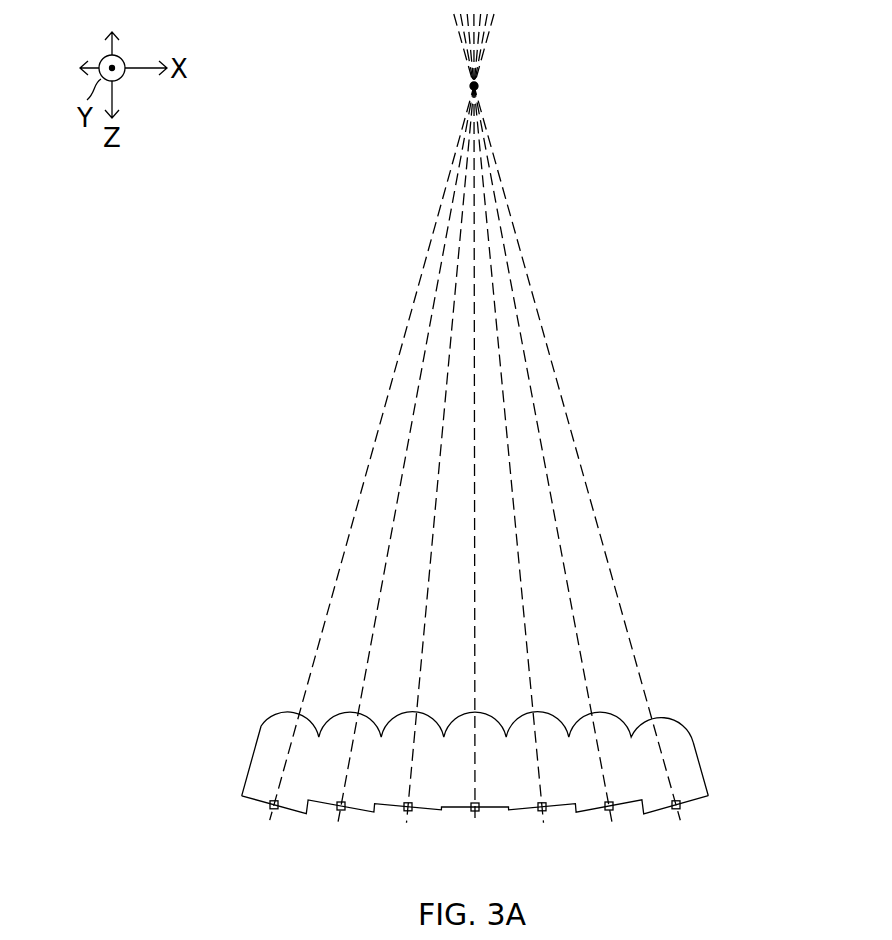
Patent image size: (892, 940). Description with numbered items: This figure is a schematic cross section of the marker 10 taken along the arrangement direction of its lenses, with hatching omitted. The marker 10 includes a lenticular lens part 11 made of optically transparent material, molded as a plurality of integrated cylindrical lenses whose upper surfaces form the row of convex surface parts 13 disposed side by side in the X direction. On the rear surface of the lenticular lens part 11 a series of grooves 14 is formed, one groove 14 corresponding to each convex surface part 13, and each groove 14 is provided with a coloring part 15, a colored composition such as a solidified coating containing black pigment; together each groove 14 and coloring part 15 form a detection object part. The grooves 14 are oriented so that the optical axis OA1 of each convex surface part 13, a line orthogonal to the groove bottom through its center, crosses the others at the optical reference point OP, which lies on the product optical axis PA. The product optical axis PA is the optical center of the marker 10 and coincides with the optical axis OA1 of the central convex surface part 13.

The marker 10 is at (759, 678).
The lenticular lens part 11 is at (697, 758).
The convex surface part 13 is at (281, 714).
The groove 14 is at (272, 805).
The coloring part 15 is at (270, 807).
The optical reference point OP is at (504, 88).
The optical axis OA1 is at (385, 415).
The product optical axis PA is at (477, 442).